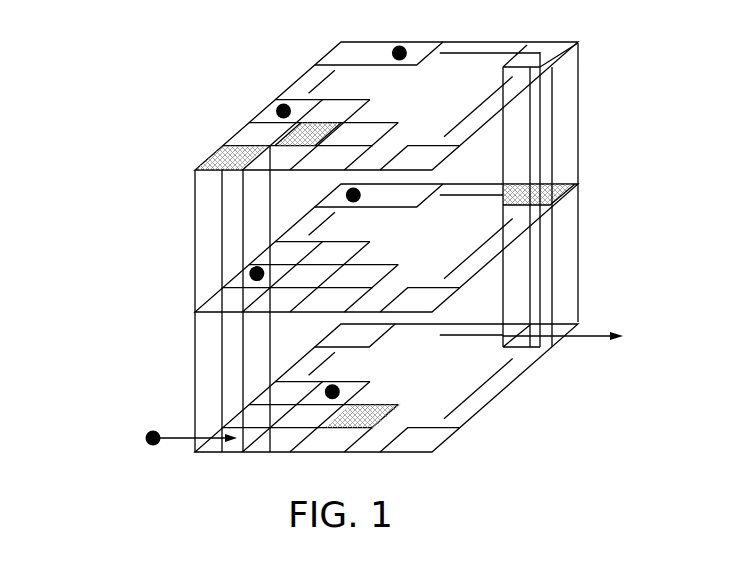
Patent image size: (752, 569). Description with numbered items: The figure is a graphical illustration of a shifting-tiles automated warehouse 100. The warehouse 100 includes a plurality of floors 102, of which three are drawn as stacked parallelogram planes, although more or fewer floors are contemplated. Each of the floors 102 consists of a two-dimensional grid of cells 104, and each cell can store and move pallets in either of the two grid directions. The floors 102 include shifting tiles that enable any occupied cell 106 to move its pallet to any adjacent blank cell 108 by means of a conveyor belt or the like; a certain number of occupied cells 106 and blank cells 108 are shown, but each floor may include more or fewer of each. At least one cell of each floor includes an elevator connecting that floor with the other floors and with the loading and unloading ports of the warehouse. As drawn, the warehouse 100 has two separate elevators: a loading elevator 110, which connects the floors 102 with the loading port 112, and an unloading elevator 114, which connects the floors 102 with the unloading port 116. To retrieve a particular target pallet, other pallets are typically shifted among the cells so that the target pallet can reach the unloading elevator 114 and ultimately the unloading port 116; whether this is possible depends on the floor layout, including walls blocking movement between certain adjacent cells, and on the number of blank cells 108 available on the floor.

The shifting-tiles automated warehouse 100 is at (90, 120).
The floors 102 is at (180, 45).
The cells 104 is at (340, 108).
The occupied cell 106 is at (417, 300).
The blank cell 108 is at (210, 161).
The loading elevator 110 is at (212, 414).
The loading port 112 is at (177, 440).
The unloading elevator 114 is at (567, 283).
The unloading port 116 is at (588, 338).